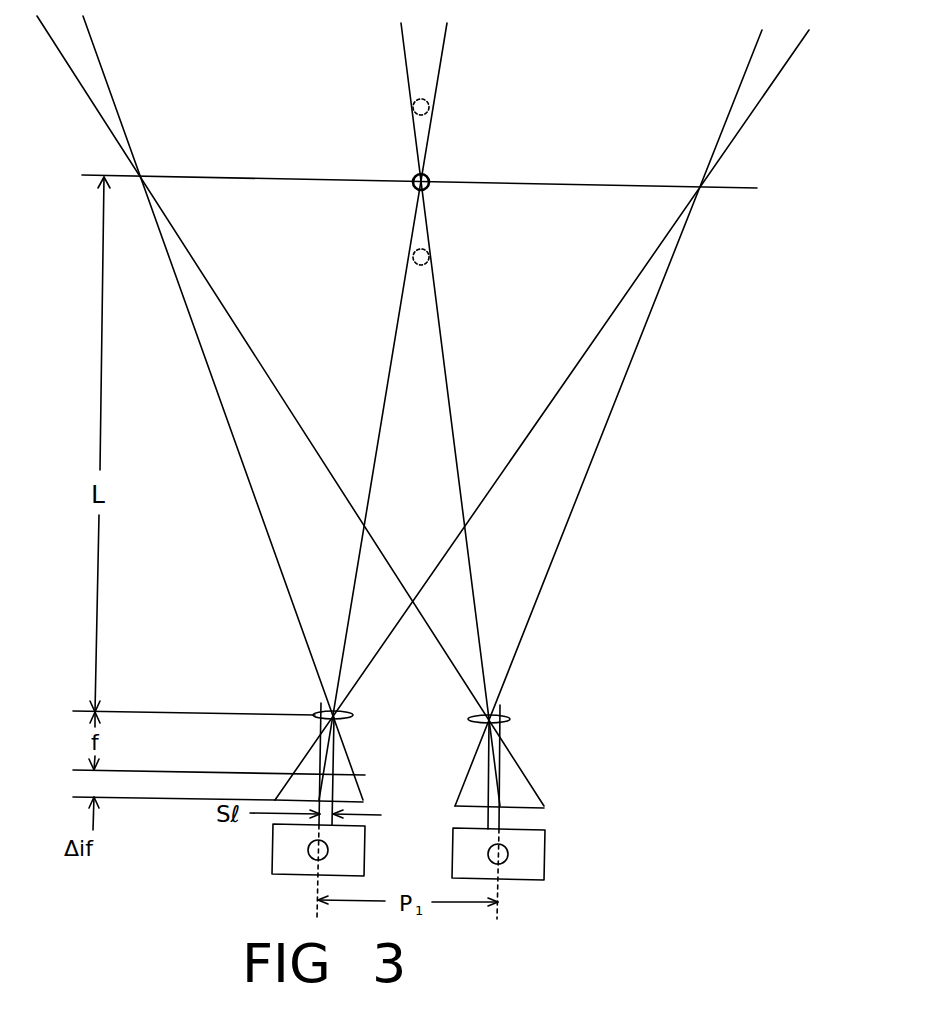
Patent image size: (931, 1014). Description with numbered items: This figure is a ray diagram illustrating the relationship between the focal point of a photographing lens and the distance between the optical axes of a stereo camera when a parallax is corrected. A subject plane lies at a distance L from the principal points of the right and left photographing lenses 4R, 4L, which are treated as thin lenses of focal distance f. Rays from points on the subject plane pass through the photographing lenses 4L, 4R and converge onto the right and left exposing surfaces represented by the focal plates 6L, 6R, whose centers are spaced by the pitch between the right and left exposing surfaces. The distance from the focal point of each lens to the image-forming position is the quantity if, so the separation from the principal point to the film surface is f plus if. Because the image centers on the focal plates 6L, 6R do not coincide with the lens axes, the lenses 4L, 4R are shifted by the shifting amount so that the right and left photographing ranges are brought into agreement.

The left photographing lens 4L is at (353, 713).
The right photographing lens 4R is at (476, 717).
The left focal plate 6L is at (355, 801).
The right focal plate 6R is at (464, 804).